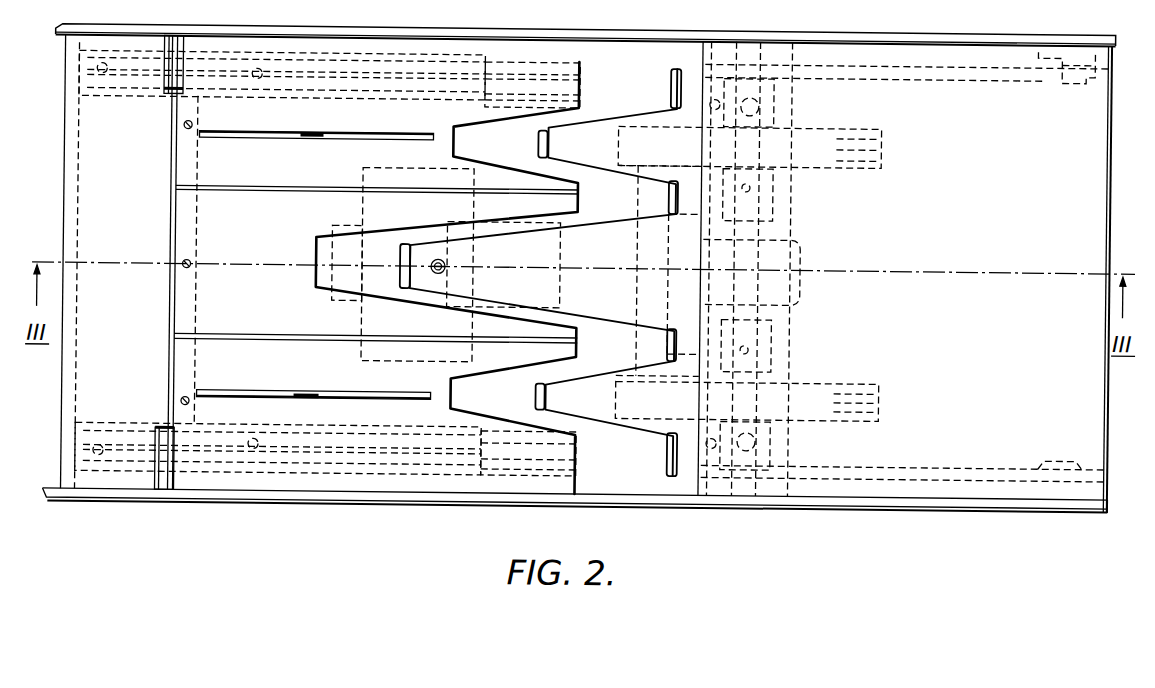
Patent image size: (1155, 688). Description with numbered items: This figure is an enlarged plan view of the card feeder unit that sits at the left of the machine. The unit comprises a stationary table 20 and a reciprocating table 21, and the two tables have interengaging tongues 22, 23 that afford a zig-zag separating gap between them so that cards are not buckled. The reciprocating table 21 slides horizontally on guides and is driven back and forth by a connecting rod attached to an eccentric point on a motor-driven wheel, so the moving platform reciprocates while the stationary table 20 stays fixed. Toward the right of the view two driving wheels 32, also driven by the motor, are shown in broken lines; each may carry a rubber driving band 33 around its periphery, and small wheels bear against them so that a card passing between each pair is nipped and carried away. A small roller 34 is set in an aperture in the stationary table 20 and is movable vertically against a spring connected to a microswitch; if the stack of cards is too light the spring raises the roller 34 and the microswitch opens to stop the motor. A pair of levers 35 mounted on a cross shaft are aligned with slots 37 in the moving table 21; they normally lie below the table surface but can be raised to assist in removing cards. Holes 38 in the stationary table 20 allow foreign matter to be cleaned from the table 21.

The stationary table 20 is at (940, 317).
The reciprocating table 21 is at (245, 320).
The tongue 22 is at (580, 197).
The tongue 23 is at (588, 160).
The driving wheel 32 is at (818, 166).
The rubber driving band 33 is at (882, 275).
The roller 34 is at (445, 266).
The lever 35 is at (315, 141).
The slot 37 is at (230, 142).
The hole 38 is at (668, 86).